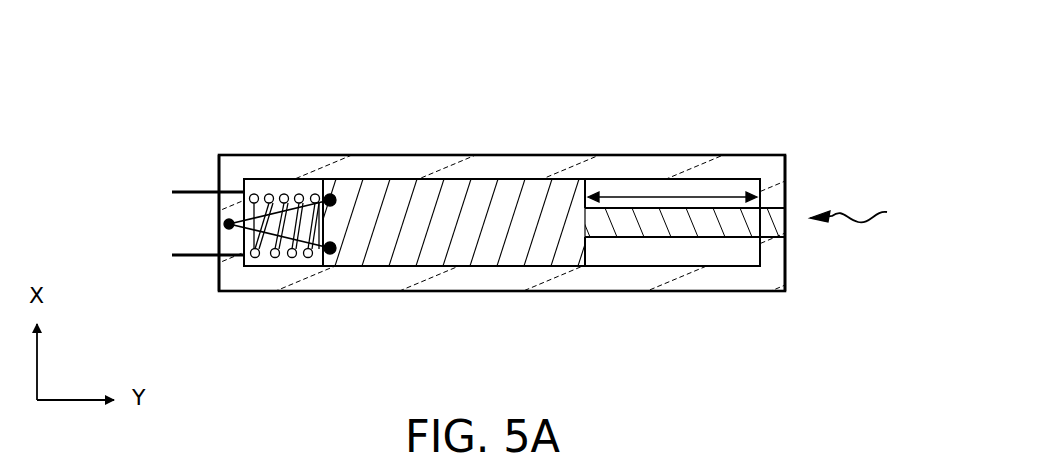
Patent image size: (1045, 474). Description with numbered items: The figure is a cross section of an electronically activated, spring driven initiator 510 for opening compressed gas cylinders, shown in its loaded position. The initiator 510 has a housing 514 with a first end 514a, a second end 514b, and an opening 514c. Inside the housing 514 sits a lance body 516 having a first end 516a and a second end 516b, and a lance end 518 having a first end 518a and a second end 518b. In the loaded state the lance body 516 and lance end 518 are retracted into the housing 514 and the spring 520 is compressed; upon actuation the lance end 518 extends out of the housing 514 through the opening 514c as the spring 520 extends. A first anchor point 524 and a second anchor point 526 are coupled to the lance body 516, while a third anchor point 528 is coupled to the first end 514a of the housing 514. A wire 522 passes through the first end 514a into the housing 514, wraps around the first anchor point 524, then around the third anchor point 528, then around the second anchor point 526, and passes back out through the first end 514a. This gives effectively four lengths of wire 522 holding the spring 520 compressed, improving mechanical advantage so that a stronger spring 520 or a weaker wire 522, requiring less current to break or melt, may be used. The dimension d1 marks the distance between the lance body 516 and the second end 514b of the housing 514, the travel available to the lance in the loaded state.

The initiator 510 is at (223, 110).
The housing 514 is at (425, 160).
The first end of housing 514a is at (216, 268).
The second end of housing 514b is at (785, 178).
The opening 514c is at (879, 212).
The lance body 516 is at (482, 240).
The first end of lance body 516a is at (307, 267).
The second end of lance body 516b is at (587, 179).
The lance end 518 is at (682, 238).
The first end of lance end 518a is at (592, 237).
The second end of lance end 518b is at (785, 232).
The spring 520 is at (285, 196).
The wire 522 is at (173, 192).
The first anchor point 524 is at (331, 253).
The second anchor point 526 is at (333, 198).
The third anchor point 528 is at (224, 223).
The distance d1 is at (698, 179).